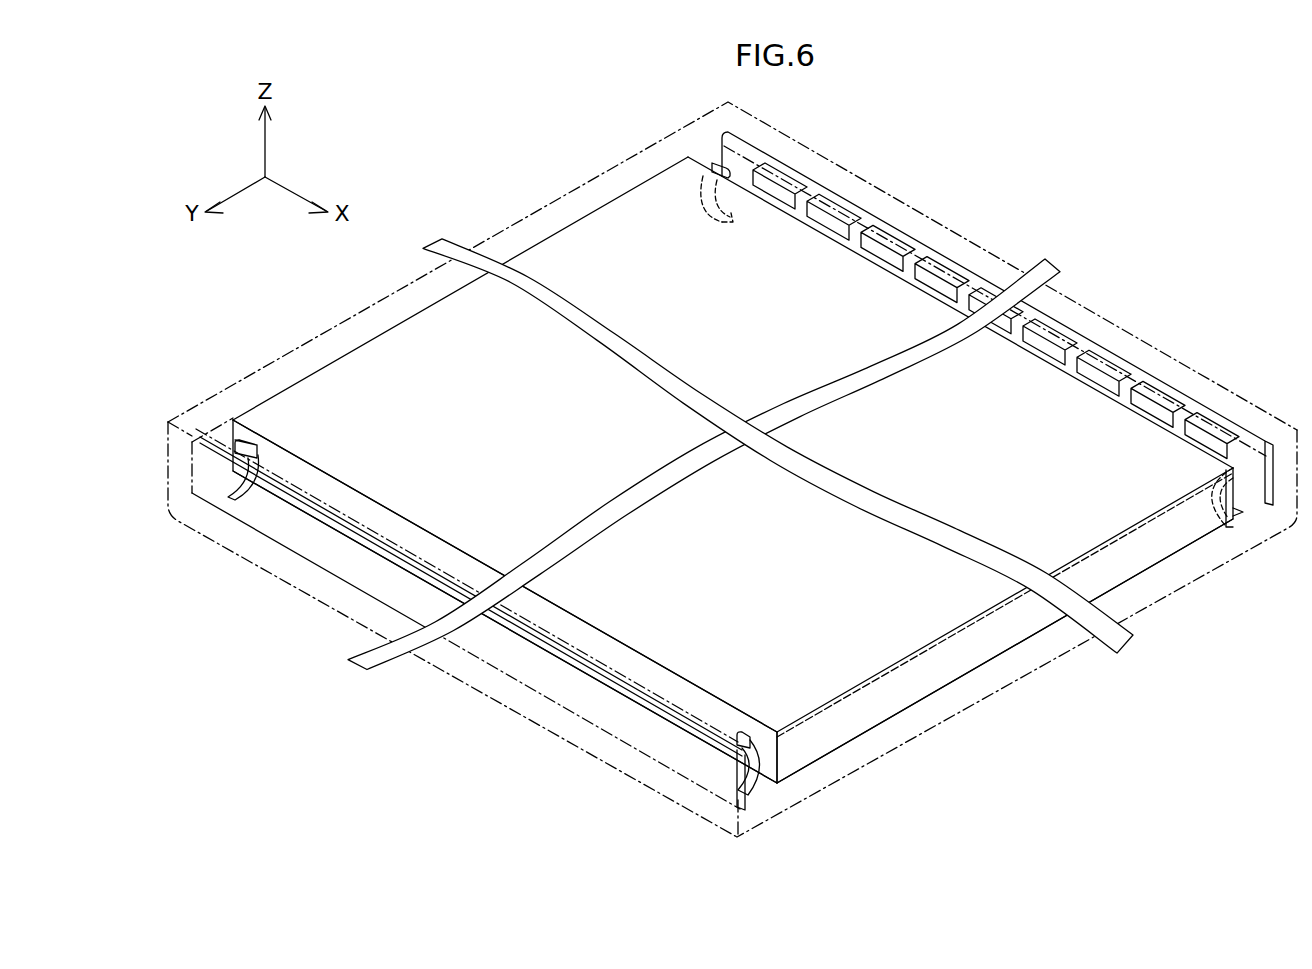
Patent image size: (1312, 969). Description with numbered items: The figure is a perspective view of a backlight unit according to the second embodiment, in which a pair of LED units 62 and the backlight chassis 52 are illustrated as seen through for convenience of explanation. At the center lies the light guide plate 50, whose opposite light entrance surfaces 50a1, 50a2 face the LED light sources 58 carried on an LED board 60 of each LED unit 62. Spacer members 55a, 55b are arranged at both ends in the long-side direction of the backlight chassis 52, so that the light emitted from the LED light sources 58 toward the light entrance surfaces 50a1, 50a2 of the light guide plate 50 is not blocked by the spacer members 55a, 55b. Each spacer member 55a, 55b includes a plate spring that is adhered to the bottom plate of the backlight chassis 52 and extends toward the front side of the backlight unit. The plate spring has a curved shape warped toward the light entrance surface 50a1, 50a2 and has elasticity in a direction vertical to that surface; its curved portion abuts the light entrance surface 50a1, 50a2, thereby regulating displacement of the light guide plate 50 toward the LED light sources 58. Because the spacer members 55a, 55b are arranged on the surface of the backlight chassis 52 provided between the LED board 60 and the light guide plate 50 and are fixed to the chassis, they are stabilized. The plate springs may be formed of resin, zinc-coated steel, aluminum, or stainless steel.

The light guide plate 50 is at (893, 605).
The light entrance surface 50a1 is at (553, 617).
The light entrance surface 50a2 is at (877, 265).
The backlight chassis 52 is at (903, 750).
The spacer member 55a is at (260, 487).
The spacer member 55b is at (700, 198).
The LED light source 58 is at (940, 273).
The LED board 60 is at (1117, 350).
The LED unit 62 is at (732, 472).